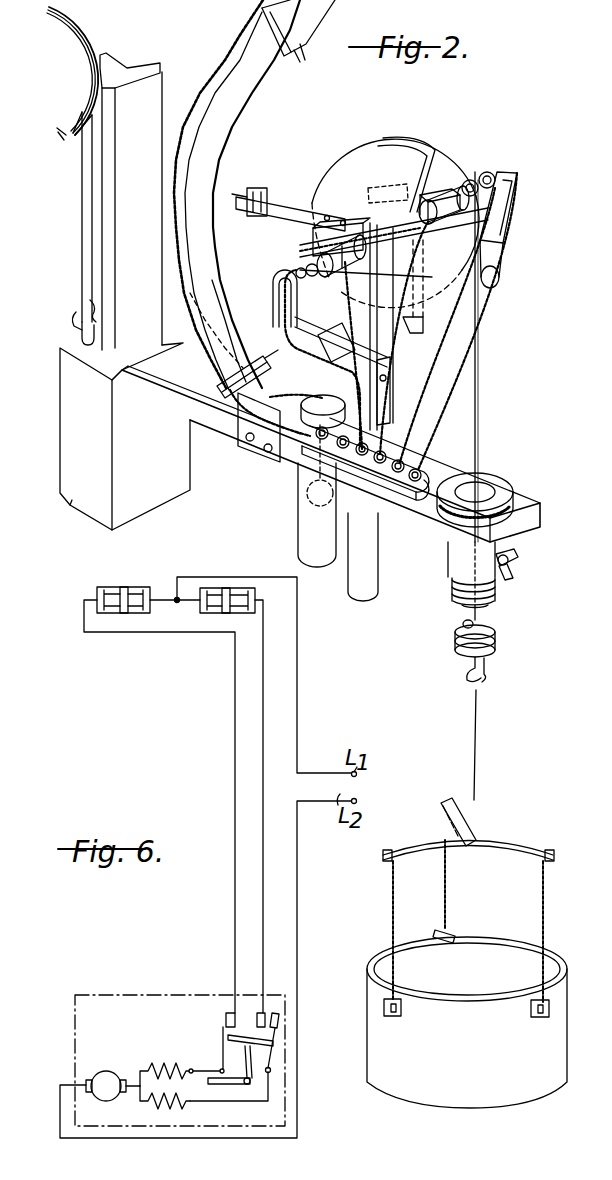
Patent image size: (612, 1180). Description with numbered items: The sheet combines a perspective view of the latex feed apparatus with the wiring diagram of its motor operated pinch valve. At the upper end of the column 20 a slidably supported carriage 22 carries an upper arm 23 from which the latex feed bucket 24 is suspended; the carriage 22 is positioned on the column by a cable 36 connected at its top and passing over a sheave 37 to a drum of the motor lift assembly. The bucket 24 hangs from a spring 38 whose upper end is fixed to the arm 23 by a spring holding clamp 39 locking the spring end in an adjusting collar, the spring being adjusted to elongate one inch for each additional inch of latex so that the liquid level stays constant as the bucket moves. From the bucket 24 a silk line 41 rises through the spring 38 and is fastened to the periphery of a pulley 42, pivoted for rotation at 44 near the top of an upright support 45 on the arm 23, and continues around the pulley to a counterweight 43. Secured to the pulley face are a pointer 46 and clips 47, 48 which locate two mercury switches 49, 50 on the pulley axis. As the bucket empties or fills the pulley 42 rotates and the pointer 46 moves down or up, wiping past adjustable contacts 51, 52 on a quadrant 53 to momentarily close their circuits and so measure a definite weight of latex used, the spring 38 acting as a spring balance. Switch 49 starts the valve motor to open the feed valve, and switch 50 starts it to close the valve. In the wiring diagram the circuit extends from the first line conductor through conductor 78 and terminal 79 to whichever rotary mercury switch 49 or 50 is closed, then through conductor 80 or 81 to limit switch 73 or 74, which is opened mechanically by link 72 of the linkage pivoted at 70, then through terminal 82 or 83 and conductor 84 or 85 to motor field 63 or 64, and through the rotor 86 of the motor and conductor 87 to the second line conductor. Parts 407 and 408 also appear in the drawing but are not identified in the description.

In FIG. 2, the column 20 is at (163, 82).
In FIG. 2, the carriage 22 is at (182, 473).
In FIG. 2, the upper arm 23 is at (217, 425).
In FIG. 2, the latex feed bucket 24 is at (557, 1023).
In FIG. 2, the cable 36 is at (84, 248).
In FIG. 2, the sheave 37 is at (68, 137).
In FIG. 2, the spring 38 is at (500, 637).
In FIG. 2, the spring holding clamp 39 is at (510, 557).
In FIG. 2, the silk line 41 is at (479, 408).
In FIG. 2, the pulley 42 is at (384, 150).
In FIG. 2, the counterweight 43 is at (300, 502).
In FIG. 2, the pivot 44 is at (369, 203).
In FIG. 2, the upright support 45 is at (413, 370).
In FIG. 2, the pointer 46 is at (249, 188).
In FIG. 2, the clip 47 is at (313, 242).
In FIG. 2, the clip 48 is at (439, 189).
In FIG. 2, the mercury switch 49 is at (334, 288).
In FIG. 6, the mercury switch 49 is at (113, 587).
In FIG. 2, the mercury switch 50 is at (446, 226).
In FIG. 6, the mercury switch 50 is at (242, 590).
In FIG. 2, the contact 51 is at (311, 45).
In FIG. 2, the contact 52 is at (278, 348).
In FIG. 2, the quadrant 53 is at (232, 122).
In FIG. 6, the motor field 63 is at (157, 1062).
In FIG. 6, the motor field 64 is at (163, 1110).
In FIG. 6, the pivot 70 is at (247, 1060).
In FIG. 6, the arm 72 is at (238, 1088).
In FIG. 6, the limit switch 73 is at (224, 1020).
In FIG. 6, the limit switch 74 is at (279, 1020).
In FIG. 2, the conductor 78 is at (376, 278).
In FIG. 6, the conductor 78 is at (297, 661).
In FIG. 6, the terminal 79 is at (176, 602).
In FIG. 2, the conductor 80 is at (300, 260).
In FIG. 6, the conductor 80 is at (155, 630).
In FIG. 2, the conductor 81 is at (472, 179).
In FIG. 6, the conductor 81 is at (263, 662).
In FIG. 6, the terminal 82 is at (221, 1070).
In FIG. 6, the terminal 83 is at (271, 1070).
In FIG. 6, the conductor 84 is at (192, 1068).
In FIG. 6, the conductor 85 is at (220, 1103).
In FIG. 6, the rotor 86 is at (112, 1068).
In FIG. 6, the conductor 87 is at (296, 905).
In FIG. 2, the pulley bracket 407 is at (490, 170).
In FIG. 2, the cord 408 is at (243, 36).